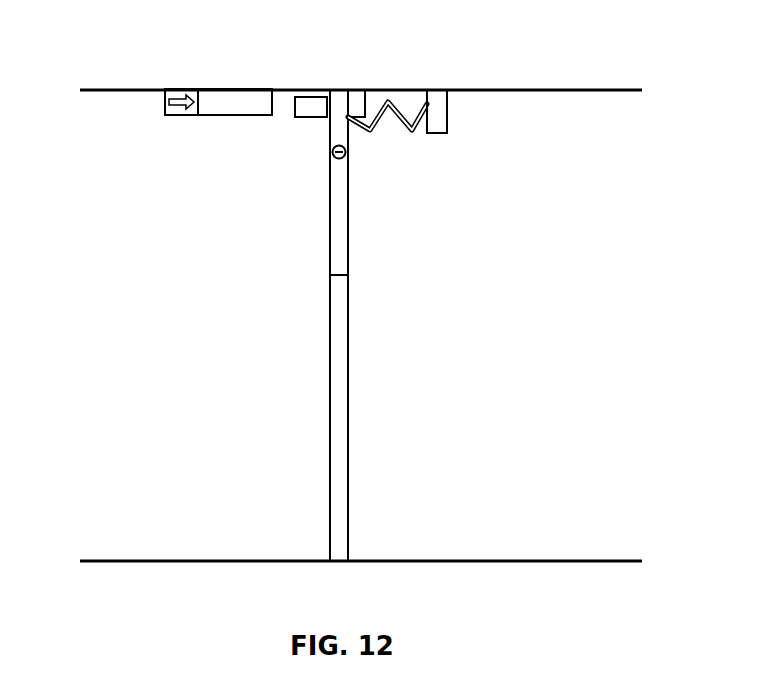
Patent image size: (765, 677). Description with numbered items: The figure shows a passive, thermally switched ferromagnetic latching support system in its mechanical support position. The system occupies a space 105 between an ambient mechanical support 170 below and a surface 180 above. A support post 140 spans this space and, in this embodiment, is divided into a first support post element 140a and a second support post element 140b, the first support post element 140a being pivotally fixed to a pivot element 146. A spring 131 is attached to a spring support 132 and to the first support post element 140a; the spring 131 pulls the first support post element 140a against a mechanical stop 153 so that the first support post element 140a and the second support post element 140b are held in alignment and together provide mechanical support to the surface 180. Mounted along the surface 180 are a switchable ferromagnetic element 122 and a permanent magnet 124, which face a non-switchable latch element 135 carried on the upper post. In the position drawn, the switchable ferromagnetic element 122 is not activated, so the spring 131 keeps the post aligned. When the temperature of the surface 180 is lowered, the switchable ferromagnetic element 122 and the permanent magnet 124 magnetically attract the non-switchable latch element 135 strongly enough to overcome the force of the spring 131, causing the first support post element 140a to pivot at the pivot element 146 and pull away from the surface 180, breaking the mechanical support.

The space 105 is at (593, 332).
The switchable ferromagnetic element 122 is at (233, 115).
The permanent magnet 124 is at (182, 115).
The spring 131 is at (412, 133).
The spring support 132 is at (447, 107).
The non-switchable latch element 135 is at (312, 118).
The support post 140 is at (389, 291).
The first support post element 140a is at (340, 90).
The second support post element 140b is at (348, 463).
The pivot element 146 is at (346, 157).
The mechanical stop 153 is at (365, 94).
The ambient mechanical support 170 is at (443, 562).
The surface 180 is at (95, 88).